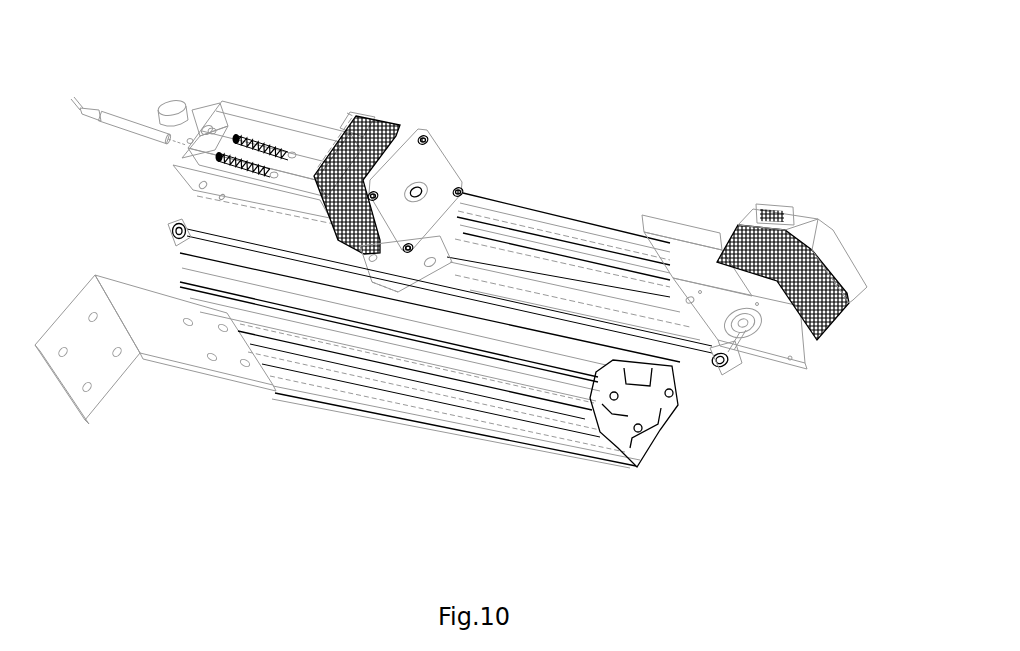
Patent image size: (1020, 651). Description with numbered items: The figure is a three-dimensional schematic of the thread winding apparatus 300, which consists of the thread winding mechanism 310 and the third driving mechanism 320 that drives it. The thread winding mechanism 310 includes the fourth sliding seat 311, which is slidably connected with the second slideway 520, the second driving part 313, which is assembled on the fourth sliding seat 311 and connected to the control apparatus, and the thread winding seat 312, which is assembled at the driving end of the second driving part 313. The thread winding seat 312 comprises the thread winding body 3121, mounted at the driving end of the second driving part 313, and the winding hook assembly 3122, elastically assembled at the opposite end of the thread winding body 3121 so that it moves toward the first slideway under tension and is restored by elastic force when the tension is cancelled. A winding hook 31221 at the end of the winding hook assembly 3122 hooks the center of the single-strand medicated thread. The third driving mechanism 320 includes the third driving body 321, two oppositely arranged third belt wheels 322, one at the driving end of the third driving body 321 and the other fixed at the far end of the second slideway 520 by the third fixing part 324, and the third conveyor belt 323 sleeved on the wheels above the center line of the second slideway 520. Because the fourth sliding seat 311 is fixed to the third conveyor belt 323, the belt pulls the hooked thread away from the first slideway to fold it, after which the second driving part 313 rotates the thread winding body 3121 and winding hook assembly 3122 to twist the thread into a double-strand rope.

The thread winding apparatus 300 is at (183, 36).
The thread winding mechanism 310 is at (466, 242).
The fourth sliding seat 311 is at (390, 275).
The thread winding seat 312 is at (301, 163).
The thread winding body 3121 is at (289, 107).
The winding hook assembly 3122 is at (206, 96).
The winding hook 31221 is at (77, 98).
The second driving part 313 is at (415, 165).
The third driving mechanism 320 is at (750, 153).
The third driving body 321 is at (833, 257).
The third belt wheels 322 is at (173, 232).
The third conveyor belt 323 is at (692, 342).
The third fixing part 324 is at (197, 193).
The second slideway 520 is at (565, 444).